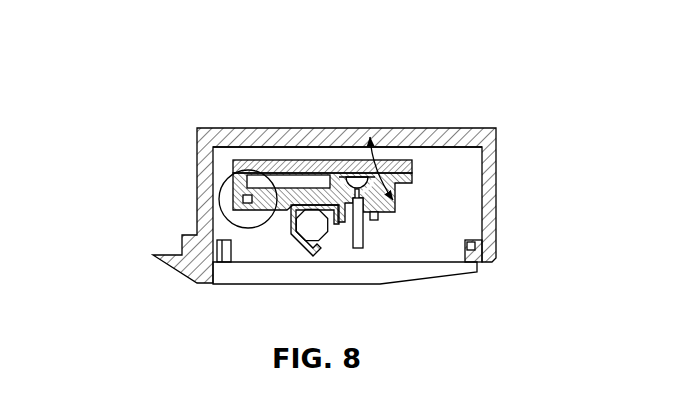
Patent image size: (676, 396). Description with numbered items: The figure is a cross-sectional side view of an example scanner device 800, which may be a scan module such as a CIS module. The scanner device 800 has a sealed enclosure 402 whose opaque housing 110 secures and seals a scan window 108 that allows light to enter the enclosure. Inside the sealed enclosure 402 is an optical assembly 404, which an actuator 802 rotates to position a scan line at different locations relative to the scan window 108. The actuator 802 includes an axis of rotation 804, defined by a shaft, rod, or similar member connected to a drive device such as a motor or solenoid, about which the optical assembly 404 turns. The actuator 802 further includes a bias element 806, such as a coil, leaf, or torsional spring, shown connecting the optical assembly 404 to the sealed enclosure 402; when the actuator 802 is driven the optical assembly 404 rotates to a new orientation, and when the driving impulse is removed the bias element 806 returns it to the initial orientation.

The scanner device 800 is at (178, 127).
The sealed enclosure 402 is at (193, 158).
The axis of rotation 804 is at (243, 199).
The actuator 802 is at (221, 210).
The scan window 108 is at (237, 277).
The opaque housing 110 is at (283, 146).
The optical assembly 404 is at (347, 150).
The bias element 806 is at (403, 154).